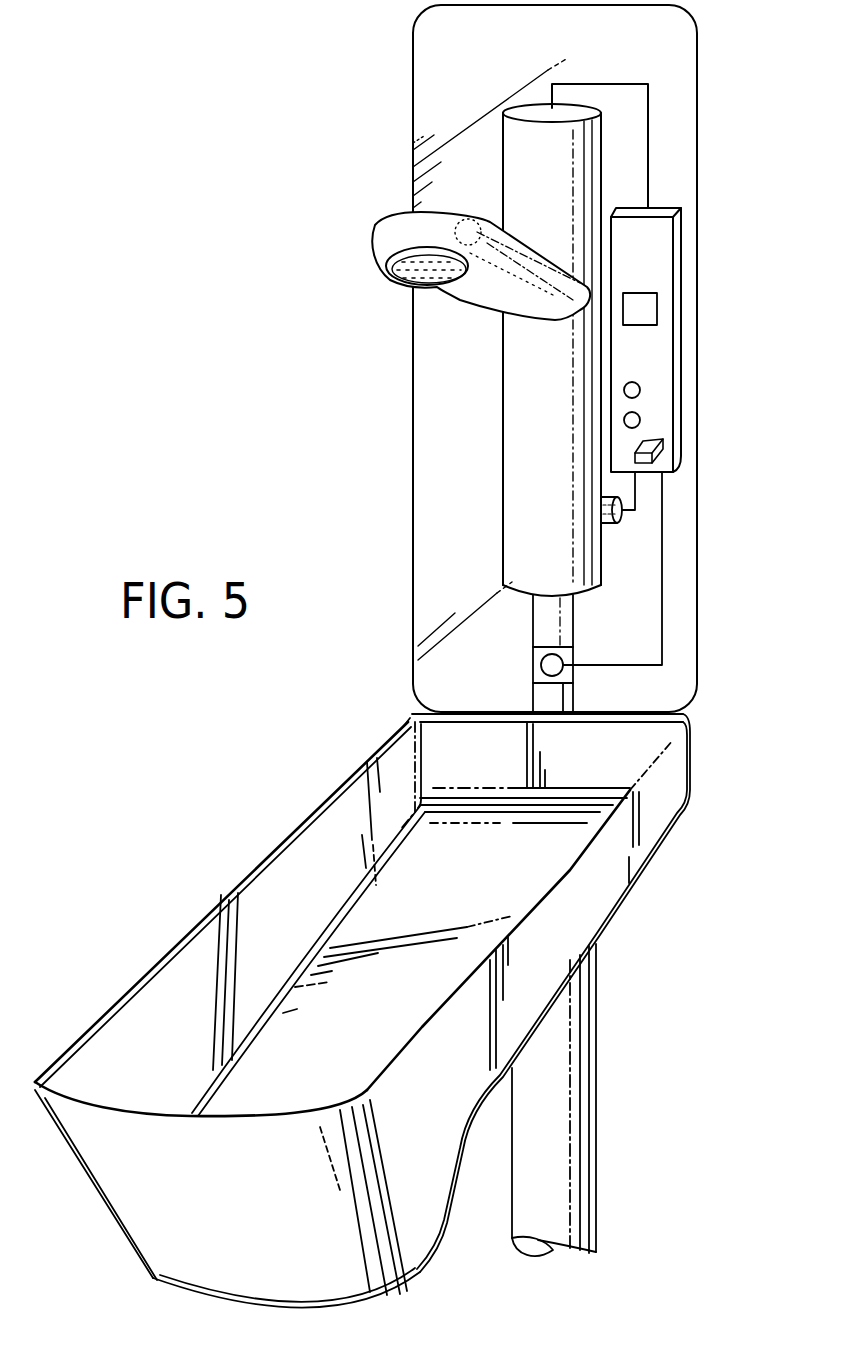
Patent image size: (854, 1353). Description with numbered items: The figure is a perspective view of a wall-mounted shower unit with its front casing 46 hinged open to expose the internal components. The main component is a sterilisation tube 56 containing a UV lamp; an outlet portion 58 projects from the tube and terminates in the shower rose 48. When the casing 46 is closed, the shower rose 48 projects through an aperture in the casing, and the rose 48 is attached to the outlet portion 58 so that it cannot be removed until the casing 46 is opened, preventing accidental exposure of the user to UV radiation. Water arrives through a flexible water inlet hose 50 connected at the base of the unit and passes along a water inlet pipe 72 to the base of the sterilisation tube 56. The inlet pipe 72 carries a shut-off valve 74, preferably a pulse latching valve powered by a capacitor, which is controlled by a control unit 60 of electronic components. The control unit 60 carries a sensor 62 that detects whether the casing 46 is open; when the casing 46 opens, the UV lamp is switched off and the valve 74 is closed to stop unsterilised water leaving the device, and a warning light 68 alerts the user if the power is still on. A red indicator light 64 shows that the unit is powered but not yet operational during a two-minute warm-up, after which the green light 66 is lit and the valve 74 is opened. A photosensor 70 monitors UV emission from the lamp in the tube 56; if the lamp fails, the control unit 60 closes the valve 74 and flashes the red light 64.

The casing 46 is at (648, 825).
The shower rose 48 is at (394, 281).
The flexible water inlet hose 50 is at (572, 1127).
The sterilisation tube 56 is at (553, 182).
The outlet portion 58 is at (454, 262).
The control unit 60 is at (687, 340).
The sensor 62 is at (657, 455).
The red indicator light 64 is at (640, 392).
The green light 66 is at (640, 421).
The warning light 68 is at (657, 312).
The photosensor 70 is at (600, 506).
The water inlet pipe 72 is at (541, 696).
The shut-off valve 74 is at (570, 674).